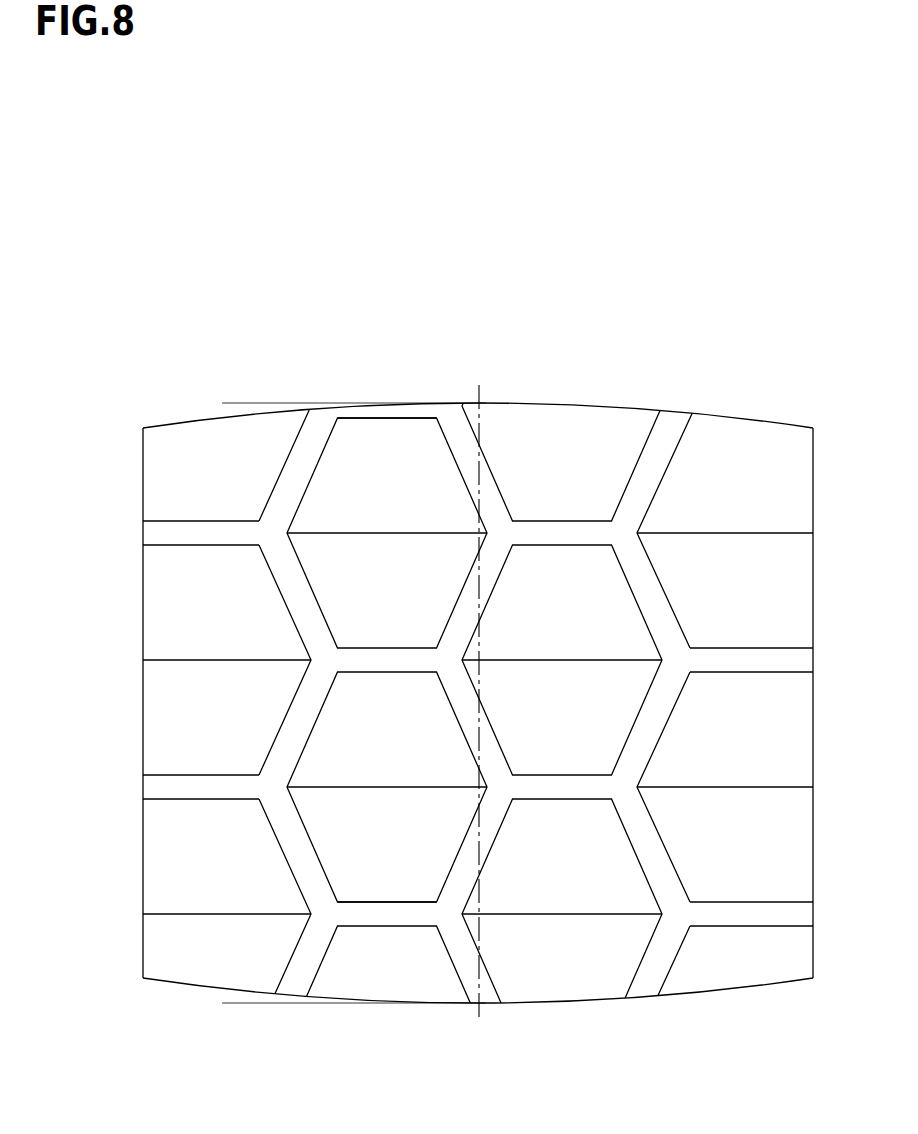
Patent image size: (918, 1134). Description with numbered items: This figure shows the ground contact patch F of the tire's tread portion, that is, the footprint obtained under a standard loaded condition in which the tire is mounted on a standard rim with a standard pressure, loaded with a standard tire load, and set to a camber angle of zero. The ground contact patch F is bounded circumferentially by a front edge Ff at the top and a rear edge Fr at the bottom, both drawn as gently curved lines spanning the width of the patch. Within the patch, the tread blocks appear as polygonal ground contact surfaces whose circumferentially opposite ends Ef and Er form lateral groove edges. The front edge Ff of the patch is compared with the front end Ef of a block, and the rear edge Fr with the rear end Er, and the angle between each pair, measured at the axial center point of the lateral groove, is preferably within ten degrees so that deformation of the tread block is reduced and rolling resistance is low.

The ground contact patch F is at (478, 699).
The front edge Ff is at (561, 404).
The rear edge Fr is at (547, 1002).
The circumferential end of tread block Ef is at (385, 417).
The circumferential end of tread block Er is at (387, 902).